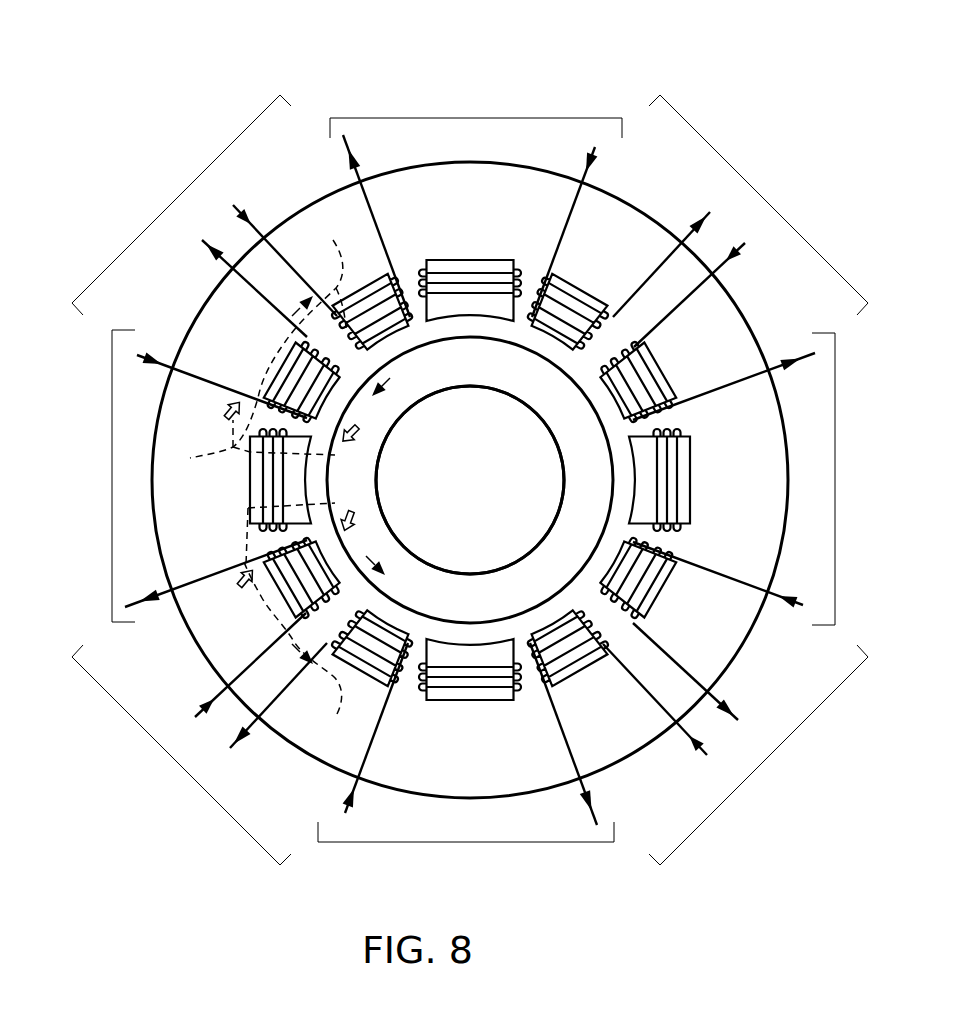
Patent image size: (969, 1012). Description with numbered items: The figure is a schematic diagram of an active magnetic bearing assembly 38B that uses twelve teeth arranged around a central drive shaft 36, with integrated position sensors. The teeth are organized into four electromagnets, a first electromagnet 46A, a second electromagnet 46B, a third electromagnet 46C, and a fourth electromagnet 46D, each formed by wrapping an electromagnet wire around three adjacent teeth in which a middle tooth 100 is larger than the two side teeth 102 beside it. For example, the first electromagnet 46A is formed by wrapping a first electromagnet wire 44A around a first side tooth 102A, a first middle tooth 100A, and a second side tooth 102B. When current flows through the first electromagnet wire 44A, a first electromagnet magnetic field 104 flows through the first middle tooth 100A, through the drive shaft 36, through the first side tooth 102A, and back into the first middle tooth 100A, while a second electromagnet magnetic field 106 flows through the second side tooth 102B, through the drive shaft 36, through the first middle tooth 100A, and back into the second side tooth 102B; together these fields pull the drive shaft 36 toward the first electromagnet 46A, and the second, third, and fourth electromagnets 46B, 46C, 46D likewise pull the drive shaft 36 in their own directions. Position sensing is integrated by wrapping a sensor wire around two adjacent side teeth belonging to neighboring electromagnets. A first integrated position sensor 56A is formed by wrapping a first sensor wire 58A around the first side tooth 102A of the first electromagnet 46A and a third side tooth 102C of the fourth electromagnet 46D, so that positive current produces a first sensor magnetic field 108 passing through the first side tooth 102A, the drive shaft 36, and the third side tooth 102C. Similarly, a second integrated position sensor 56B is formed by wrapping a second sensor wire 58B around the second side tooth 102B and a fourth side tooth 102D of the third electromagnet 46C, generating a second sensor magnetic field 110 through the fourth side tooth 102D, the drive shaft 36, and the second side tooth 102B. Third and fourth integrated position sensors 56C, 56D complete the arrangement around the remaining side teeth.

The active magnetic bearing assembly 38B is at (187, 82).
The drive shaft 36 is at (488, 575).
The first electromagnet wire 44A is at (195, 715).
The first electromagnet 46A is at (171, 460).
The second electromagnet 46B is at (835, 480).
The third electromagnet 46C is at (476, 195).
The fourth electromagnet 46D is at (466, 769).
The first integrated position sensor 56A is at (199, 739).
The second integrated position sensor 56B is at (184, 190).
The third integrated position sensor 56C is at (772, 758).
The fourth integrated position sensor 56D is at (770, 200).
The first sensor wire 58A is at (380, 737).
The second sensor wire 58B is at (191, 373).
The middle tooth 100 is at (632, 456).
The first middle tooth 100A is at (330, 472).
The side tooth 102 is at (585, 597).
The first side tooth 102A is at (338, 548).
The second side tooth 102B is at (330, 398).
The third side tooth 102C is at (355, 590).
The fourth side tooth 102D is at (395, 327).
The first electromagnet magnetic field 104 is at (252, 545).
The second electromagnet magnetic field 106 is at (242, 447).
The first sensor magnetic field 108 is at (303, 650).
The second sensor magnetic field 110 is at (274, 336).